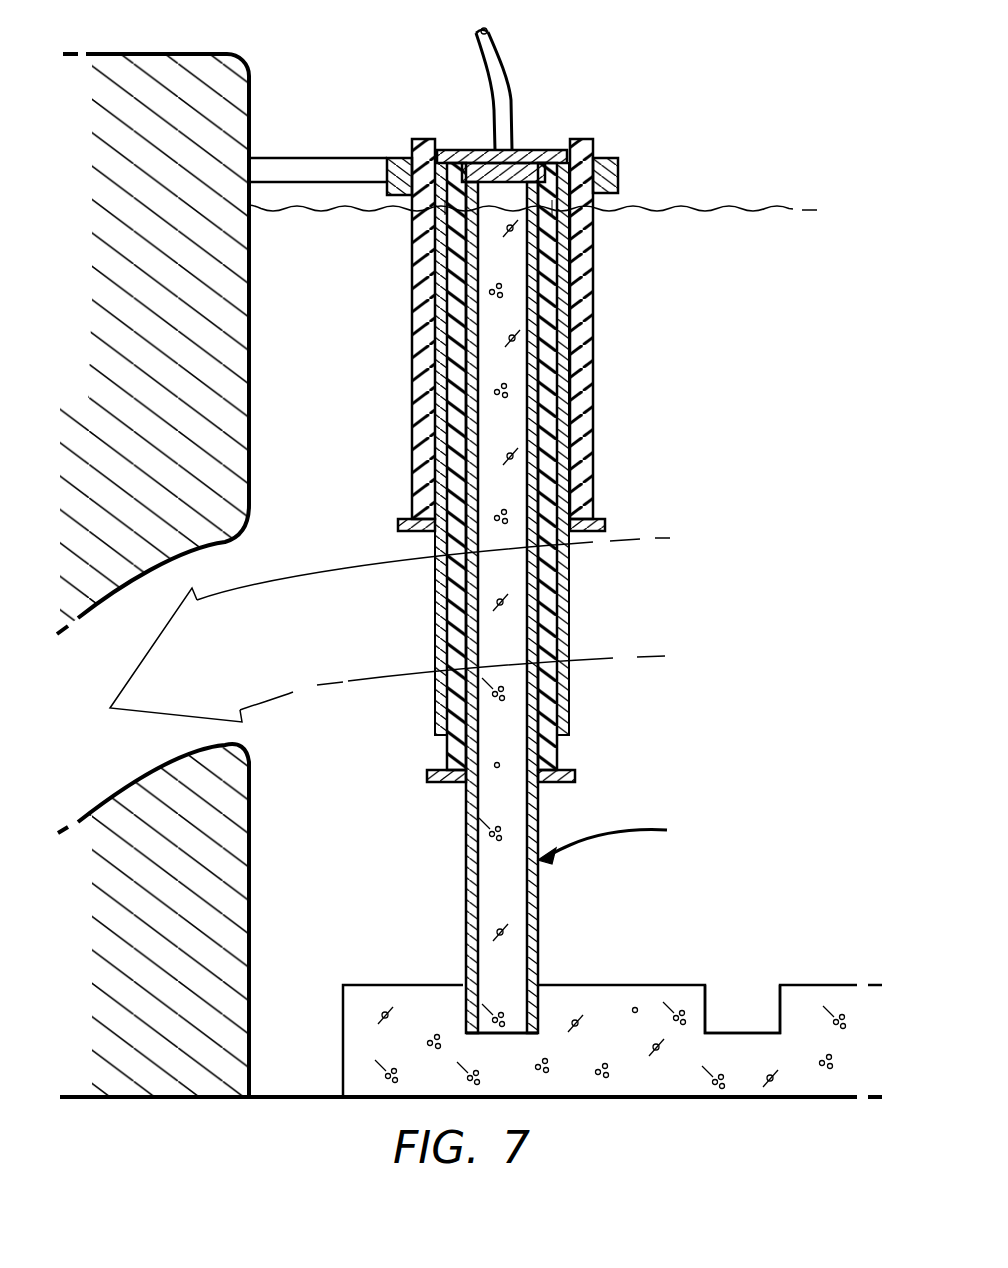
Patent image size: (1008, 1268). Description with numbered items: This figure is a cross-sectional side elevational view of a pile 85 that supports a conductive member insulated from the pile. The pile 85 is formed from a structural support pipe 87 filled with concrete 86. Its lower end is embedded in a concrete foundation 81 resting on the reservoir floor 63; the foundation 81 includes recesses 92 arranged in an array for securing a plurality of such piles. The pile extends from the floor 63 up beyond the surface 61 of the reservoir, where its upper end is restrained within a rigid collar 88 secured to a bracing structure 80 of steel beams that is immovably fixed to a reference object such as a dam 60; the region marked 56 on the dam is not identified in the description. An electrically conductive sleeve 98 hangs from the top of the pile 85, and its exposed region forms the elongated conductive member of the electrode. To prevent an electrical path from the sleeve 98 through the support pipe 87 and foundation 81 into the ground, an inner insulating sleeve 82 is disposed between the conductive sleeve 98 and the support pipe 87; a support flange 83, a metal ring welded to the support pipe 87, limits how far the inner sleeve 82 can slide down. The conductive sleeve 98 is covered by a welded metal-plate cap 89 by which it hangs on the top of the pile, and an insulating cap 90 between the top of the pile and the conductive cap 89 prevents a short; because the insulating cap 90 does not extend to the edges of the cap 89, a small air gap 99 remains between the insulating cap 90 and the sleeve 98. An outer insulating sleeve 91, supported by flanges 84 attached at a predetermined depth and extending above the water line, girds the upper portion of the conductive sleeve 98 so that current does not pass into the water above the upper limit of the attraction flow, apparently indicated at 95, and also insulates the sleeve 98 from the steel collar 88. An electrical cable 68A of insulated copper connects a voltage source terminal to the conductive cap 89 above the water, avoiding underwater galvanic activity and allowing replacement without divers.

The dam 60 is at (241, 72).
The passage 56 is at (222, 531).
The bracing structure 80 is at (297, 166).
The rigid collar 88 is at (392, 162).
The conductive cap 89 is at (450, 152).
The insulating cap 90 is at (541, 168).
The outer insulating sleeve 91 is at (586, 345).
The flanges 84 is at (410, 527).
The inner insulating sleeve 82 is at (446, 745).
The conductive sleeve 98 is at (445, 588).
The support flange 83 is at (438, 781).
The concrete 86 is at (469, 607).
The structural support pipe 87 is at (470, 896).
The pile 85 is at (619, 840).
The electrical cable 68A is at (497, 47).
The air gap 99 is at (452, 198).
The surface of the reservoir 61 is at (712, 210).
The flow path 95 is at (620, 658).
The foundation 81 is at (598, 985).
The recesses 92 is at (737, 1031).
The reservoir floor 63 is at (280, 1097).